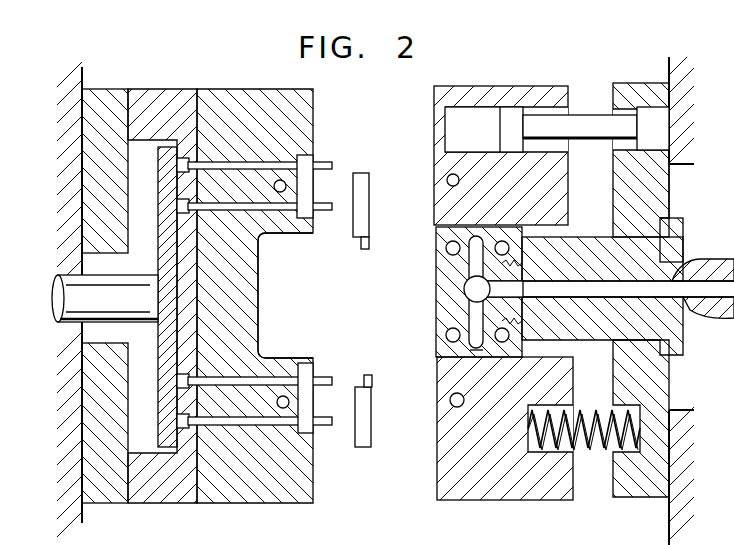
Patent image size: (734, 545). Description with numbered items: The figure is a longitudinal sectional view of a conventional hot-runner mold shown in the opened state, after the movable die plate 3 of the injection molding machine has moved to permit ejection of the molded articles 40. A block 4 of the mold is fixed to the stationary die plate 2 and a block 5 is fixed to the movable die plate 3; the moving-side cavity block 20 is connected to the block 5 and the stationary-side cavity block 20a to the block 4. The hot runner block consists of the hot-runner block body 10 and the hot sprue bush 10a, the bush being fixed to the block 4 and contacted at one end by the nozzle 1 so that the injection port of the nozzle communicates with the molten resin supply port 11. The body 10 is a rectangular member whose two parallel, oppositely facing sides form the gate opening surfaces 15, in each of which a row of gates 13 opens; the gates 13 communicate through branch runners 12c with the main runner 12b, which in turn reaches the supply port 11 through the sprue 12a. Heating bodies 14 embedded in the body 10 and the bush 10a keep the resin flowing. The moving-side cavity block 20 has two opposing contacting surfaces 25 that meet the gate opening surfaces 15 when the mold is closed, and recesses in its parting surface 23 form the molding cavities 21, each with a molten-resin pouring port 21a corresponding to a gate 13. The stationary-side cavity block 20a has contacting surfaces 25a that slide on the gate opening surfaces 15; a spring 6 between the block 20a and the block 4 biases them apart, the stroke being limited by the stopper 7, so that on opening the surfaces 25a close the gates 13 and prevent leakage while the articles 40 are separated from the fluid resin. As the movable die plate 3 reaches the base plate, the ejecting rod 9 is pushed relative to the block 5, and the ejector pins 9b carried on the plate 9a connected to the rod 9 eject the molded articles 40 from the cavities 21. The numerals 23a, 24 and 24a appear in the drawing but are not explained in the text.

The nozzle 1 is at (700, 262).
The stationary die plate 2 is at (695, 432).
The movable die plate 3 is at (68, 176).
The block 4 is at (648, 496).
The block 5 is at (111, 100).
The spring 6 is at (600, 414).
The stopper 7 is at (598, 122).
The ejecting rod 9 is at (66, 317).
The plate 9a is at (163, 345).
The ejector pins 9b is at (233, 168).
The hot-runner block body 10 is at (440, 290).
The hot sprue bush 10a is at (669, 216).
The molten resin supply port 11 is at (690, 233).
The sprue 12a is at (597, 299).
The main runner 12b is at (470, 295).
The branch runners 12c is at (468, 280).
The gates 13 is at (482, 357).
The heating bodies 14 is at (452, 248).
The gate opening surfaces 15 is at (445, 240).
The moving-side cavity block 20 is at (233, 500).
The stationary-side cavity block 20a is at (500, 498).
The molding cavities 21 is at (316, 185).
The molten-resin pouring port 21a is at (310, 364).
The parting surface 23 is at (315, 139).
The upper block 23a is at (433, 137).
The guide pin 24 is at (273, 186).
The bore 24a is at (460, 181).
The contacting surfaces 25 is at (300, 238).
The contacting surfaces 25a is at (448, 370).
The molded articles 40 is at (366, 448).